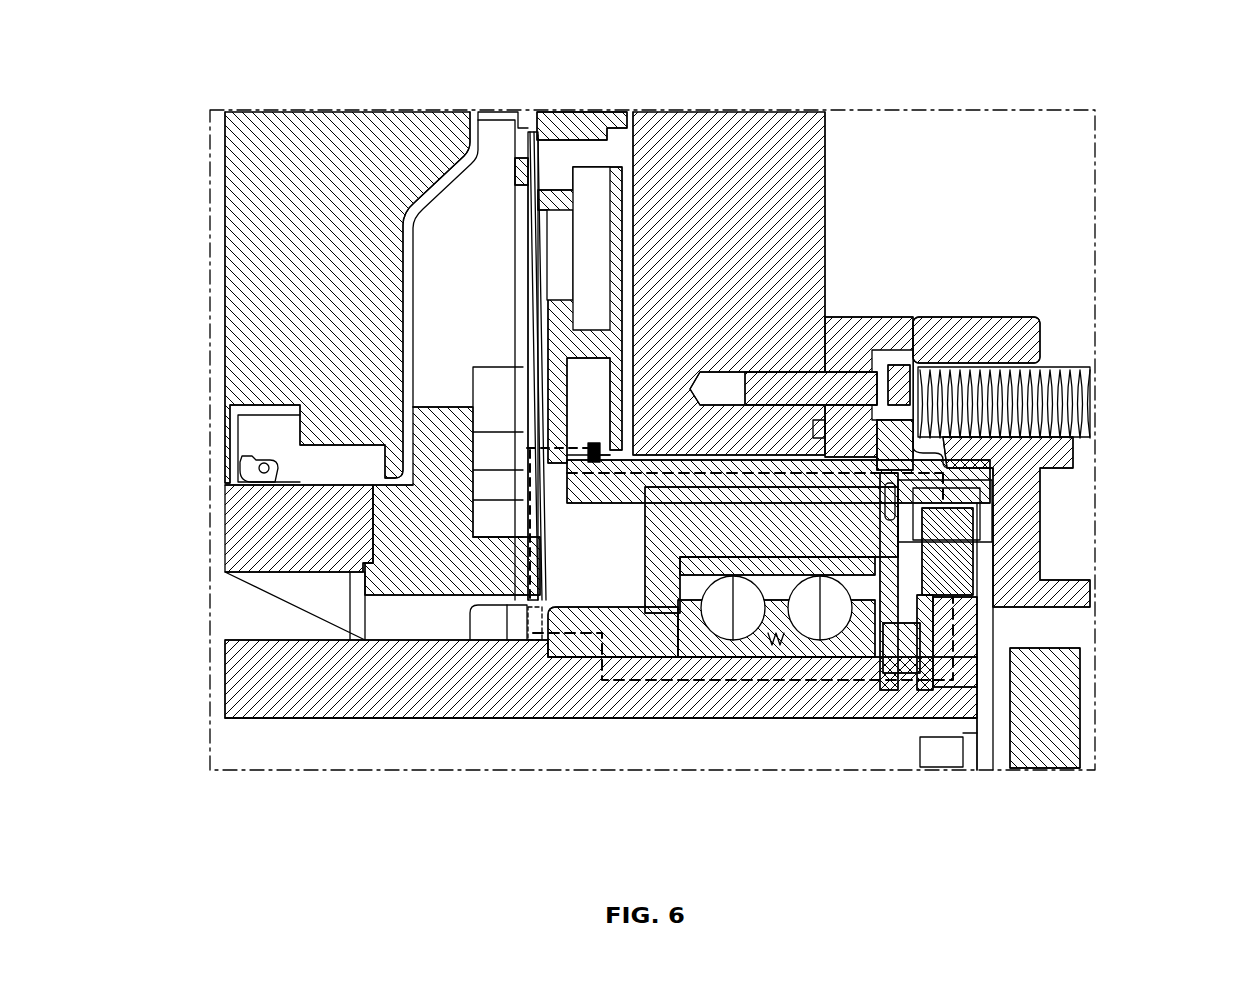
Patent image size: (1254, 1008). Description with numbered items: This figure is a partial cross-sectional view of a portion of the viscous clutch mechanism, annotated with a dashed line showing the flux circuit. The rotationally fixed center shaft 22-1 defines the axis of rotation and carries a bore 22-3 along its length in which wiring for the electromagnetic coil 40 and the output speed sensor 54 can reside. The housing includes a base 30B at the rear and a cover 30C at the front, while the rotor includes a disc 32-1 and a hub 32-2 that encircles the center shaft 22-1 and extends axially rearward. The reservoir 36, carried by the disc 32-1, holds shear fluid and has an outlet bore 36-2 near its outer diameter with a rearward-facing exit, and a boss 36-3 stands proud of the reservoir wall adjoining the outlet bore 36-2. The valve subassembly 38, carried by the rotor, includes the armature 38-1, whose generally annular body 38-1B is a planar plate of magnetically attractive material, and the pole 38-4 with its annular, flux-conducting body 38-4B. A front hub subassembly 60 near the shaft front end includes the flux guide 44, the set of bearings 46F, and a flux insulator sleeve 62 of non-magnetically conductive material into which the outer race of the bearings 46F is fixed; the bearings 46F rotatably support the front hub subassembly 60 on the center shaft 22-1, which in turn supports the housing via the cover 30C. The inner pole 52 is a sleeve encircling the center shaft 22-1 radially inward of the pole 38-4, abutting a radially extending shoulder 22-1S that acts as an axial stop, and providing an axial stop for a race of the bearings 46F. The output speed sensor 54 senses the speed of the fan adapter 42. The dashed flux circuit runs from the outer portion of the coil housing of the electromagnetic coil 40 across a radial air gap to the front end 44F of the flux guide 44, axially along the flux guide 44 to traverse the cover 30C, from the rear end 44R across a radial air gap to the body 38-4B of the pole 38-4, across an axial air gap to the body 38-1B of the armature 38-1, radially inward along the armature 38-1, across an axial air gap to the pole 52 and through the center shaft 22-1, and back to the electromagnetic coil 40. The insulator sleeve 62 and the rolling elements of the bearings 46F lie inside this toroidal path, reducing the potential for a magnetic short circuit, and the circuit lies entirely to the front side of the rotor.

The base 30B is at (312, 116).
The disc 32-1 is at (485, 147).
The boss 36-3 is at (537, 130).
The outlet bore 36-2 is at (557, 162).
The reservoir 36 is at (593, 197).
The cover 30C is at (735, 120).
The pole 38-4 is at (593, 445).
The body 38-4B is at (572, 380).
The rear end 44R is at (617, 450).
The flux guide 44 is at (833, 453).
The front hub subassembly 60 is at (984, 290).
The adapter 42 is at (1025, 316).
The front end 44F is at (990, 472).
The flux insulator sleeve 62 is at (985, 555).
The electromagnetic coil 40 is at (956, 560).
The valve subassembly 38 is at (505, 273).
The armature 38-1 is at (505, 350).
The hub 32-2 is at (225, 512).
The center shaft 22-1 is at (290, 690).
The bore 22-3 is at (348, 745).
The body 38-1B is at (527, 618).
The shoulder 22-1S is at (545, 645).
The pole 52 is at (668, 633).
The set of bearings 46F is at (862, 637).
The output speed sensor 54 is at (1067, 717).